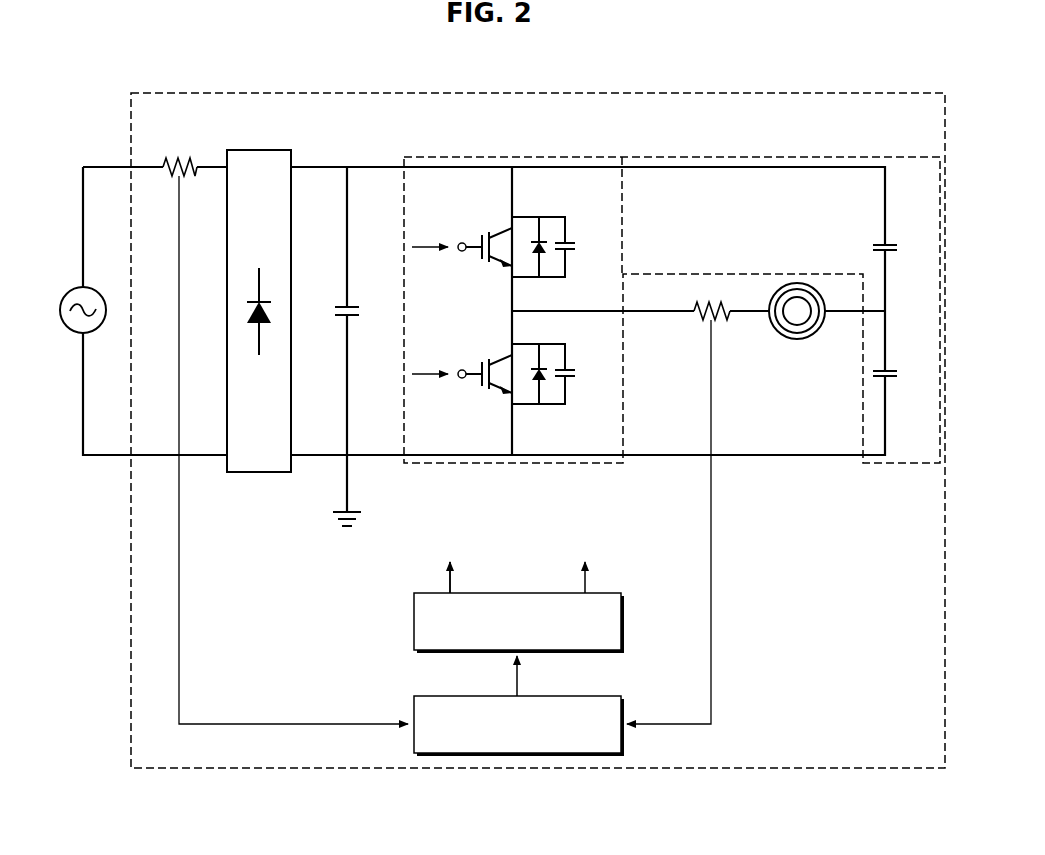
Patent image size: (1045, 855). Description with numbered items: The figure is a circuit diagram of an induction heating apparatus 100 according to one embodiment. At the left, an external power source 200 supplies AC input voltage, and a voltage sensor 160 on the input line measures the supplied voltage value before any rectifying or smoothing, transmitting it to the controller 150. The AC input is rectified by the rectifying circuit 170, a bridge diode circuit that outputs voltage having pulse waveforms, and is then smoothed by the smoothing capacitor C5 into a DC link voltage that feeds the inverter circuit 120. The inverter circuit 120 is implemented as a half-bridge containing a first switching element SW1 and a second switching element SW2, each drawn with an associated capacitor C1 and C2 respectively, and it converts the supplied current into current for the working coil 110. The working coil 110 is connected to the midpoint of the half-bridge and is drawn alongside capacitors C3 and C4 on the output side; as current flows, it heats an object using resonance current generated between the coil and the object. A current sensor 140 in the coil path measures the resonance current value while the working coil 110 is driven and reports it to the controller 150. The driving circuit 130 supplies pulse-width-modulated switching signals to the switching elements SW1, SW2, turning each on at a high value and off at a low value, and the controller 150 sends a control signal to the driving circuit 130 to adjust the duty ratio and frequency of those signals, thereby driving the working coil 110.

The induction heating apparatus 100 is at (541, 92).
The working coil 110 is at (797, 340).
The inverter circuit 120 is at (903, 464).
The driving circuit 130 is at (625, 623).
The current sensor 140 is at (699, 323).
The controller 150 is at (625, 706).
The voltage sensor 160 is at (168, 158).
The rectifying circuit 170 is at (261, 149).
The external power source 200 is at (72, 287).
The first switching element SW1 is at (495, 222).
The second switching element SW2 is at (495, 350).
The first capacitor C1 is at (597, 247).
The second capacitor C2 is at (597, 375).
The third capacitor C3 is at (900, 248).
The fourth capacitor C4 is at (900, 375).
The smoothing capacitor C5 is at (361, 413).